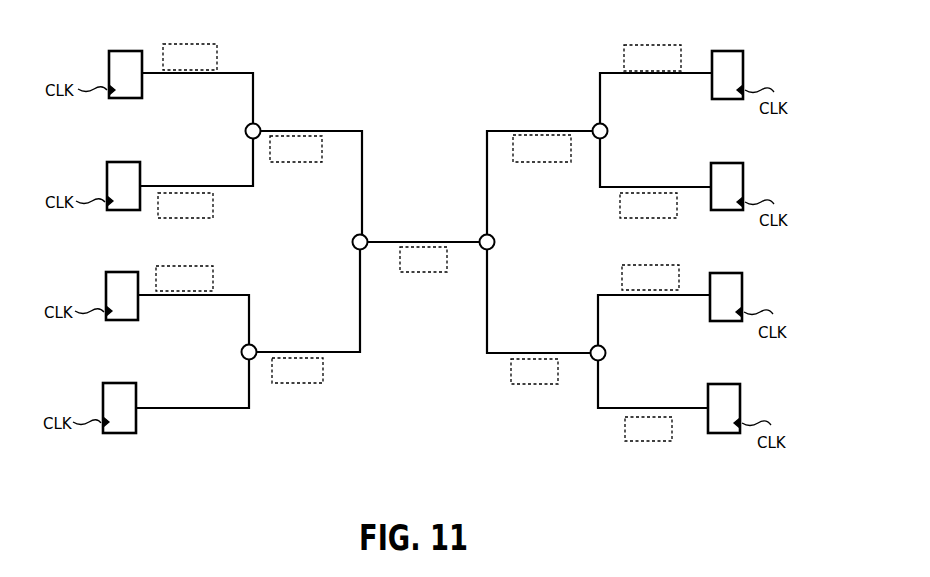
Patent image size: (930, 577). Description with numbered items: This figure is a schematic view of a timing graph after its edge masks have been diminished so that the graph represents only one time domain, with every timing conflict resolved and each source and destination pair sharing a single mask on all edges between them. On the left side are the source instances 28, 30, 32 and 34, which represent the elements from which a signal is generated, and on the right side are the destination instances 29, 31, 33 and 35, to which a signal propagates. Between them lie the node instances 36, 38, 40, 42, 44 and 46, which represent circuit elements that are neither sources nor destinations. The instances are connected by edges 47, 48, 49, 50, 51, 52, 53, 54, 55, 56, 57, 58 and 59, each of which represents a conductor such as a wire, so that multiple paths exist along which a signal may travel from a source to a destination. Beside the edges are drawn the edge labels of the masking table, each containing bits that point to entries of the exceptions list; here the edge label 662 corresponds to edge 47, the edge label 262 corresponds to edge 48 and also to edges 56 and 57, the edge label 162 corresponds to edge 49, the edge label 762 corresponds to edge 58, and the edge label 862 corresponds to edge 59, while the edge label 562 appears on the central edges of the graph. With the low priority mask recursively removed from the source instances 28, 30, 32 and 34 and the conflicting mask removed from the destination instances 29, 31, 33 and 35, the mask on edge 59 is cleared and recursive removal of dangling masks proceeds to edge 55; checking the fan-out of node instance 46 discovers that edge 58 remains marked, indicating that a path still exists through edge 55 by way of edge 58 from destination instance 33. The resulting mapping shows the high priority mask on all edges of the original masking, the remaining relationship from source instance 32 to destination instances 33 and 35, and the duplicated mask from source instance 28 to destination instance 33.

The source instance 28 is at (109, 60).
The destination instance 29 is at (743, 58).
The source instance 30 is at (107, 171).
The destination instance 31 is at (743, 170).
The source instance 32 is at (106, 281).
The destination instance 33 is at (742, 281).
The source instance 34 is at (103, 392).
The destination instance 35 is at (740, 392).
The node instance 36 is at (261, 128).
The node instance 38 is at (257, 349).
The node instance 40 is at (368, 240).
The node instance 42 is at (480, 240).
The node instance 44 is at (593, 129).
The node instance 46 is at (591, 350).
The edge 47 is at (216, 75).
The edge 48 is at (164, 186).
The edge 49 is at (213, 297).
The edge 50 is at (161, 408).
The edge 51 is at (328, 131).
The edge 52 is at (362, 326).
The edge 53 is at (430, 242).
The edge 54 is at (485, 139).
The edge 55 is at (485, 322).
The edge 56 is at (683, 75).
The edge 57 is at (632, 187).
The edge 58 is at (684, 297).
The edge 59 is at (634, 408).
The edge label 162 is at (204, 266).
The edge label 262 is at (190, 218).
The edge label 562 is at (423, 272).
The edge label 662 is at (205, 44).
The edge label 762 is at (632, 265).
The edge label 862 is at (650, 441).